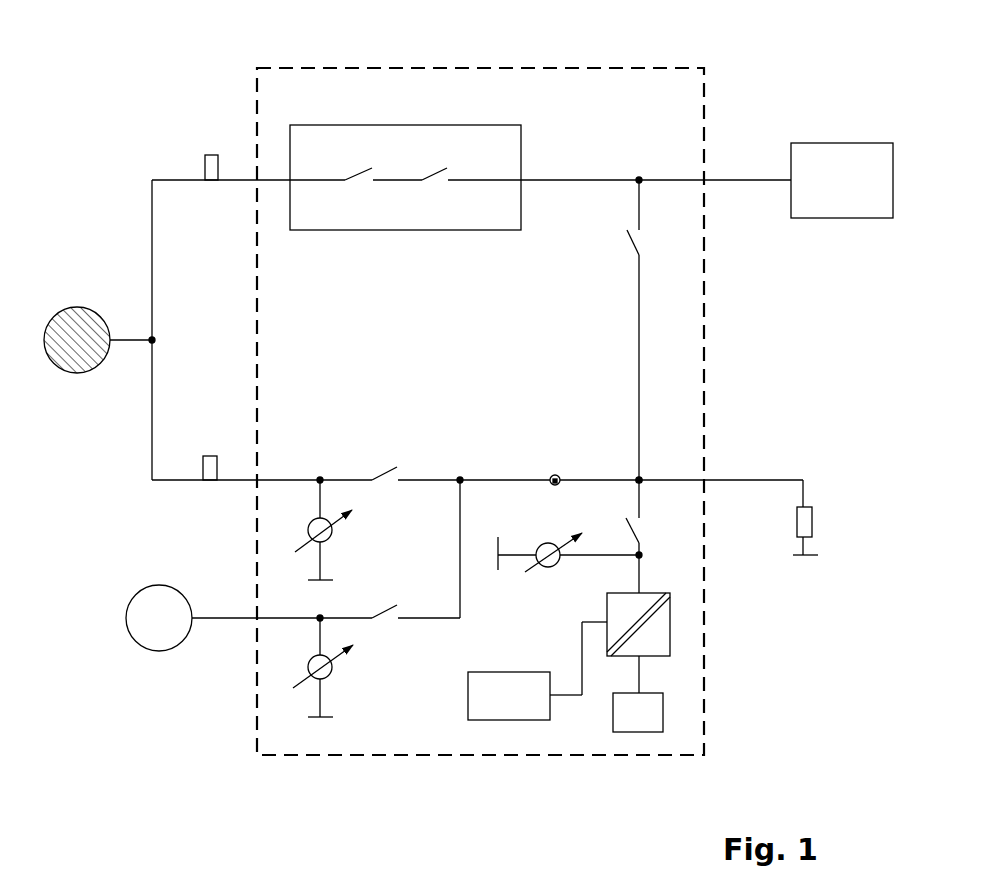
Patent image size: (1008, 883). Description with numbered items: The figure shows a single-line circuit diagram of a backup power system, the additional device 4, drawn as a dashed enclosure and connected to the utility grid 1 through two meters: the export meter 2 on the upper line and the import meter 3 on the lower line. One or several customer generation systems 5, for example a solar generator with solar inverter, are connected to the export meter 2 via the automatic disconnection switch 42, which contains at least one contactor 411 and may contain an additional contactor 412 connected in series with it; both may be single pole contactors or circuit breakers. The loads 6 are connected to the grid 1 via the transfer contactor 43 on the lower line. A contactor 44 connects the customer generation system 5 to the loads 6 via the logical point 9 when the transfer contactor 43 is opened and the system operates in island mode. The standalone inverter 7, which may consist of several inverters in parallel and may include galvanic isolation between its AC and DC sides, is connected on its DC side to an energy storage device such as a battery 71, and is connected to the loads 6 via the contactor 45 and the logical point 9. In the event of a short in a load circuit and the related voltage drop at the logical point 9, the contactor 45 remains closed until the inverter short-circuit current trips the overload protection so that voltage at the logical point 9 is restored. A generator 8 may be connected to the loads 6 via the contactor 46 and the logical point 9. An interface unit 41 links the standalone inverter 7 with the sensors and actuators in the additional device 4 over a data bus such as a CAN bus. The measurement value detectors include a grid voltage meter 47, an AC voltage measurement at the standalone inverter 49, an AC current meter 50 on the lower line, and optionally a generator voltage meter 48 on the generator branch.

The utility grid 1 is at (60, 307).
The export meter 2 is at (204, 152).
The import meter 3 is at (213, 453).
The additional device 4 is at (322, 62).
The customer generation system 5 is at (868, 138).
The loads 6 is at (820, 505).
The standalone inverter 7 is at (678, 622).
The generator 8 is at (132, 587).
The logical point 9 is at (635, 477).
The interface unit 41 is at (507, 722).
The automatic disconnection switch 42 is at (450, 120).
The transfer contactor 43 is at (390, 462).
The contactor 44 is at (625, 243).
The contactor 45 is at (642, 528).
The contactor 46 is at (390, 621).
The grid voltage meter 47 is at (338, 542).
The generator voltage meter 48 is at (338, 683).
The AC voltage measurement at the standalone inverter 49 is at (553, 568).
The AC current meter 50 is at (548, 468).
The battery 71 is at (637, 732).
The contactor 411 is at (357, 182).
The additional contactor 412 is at (438, 182).